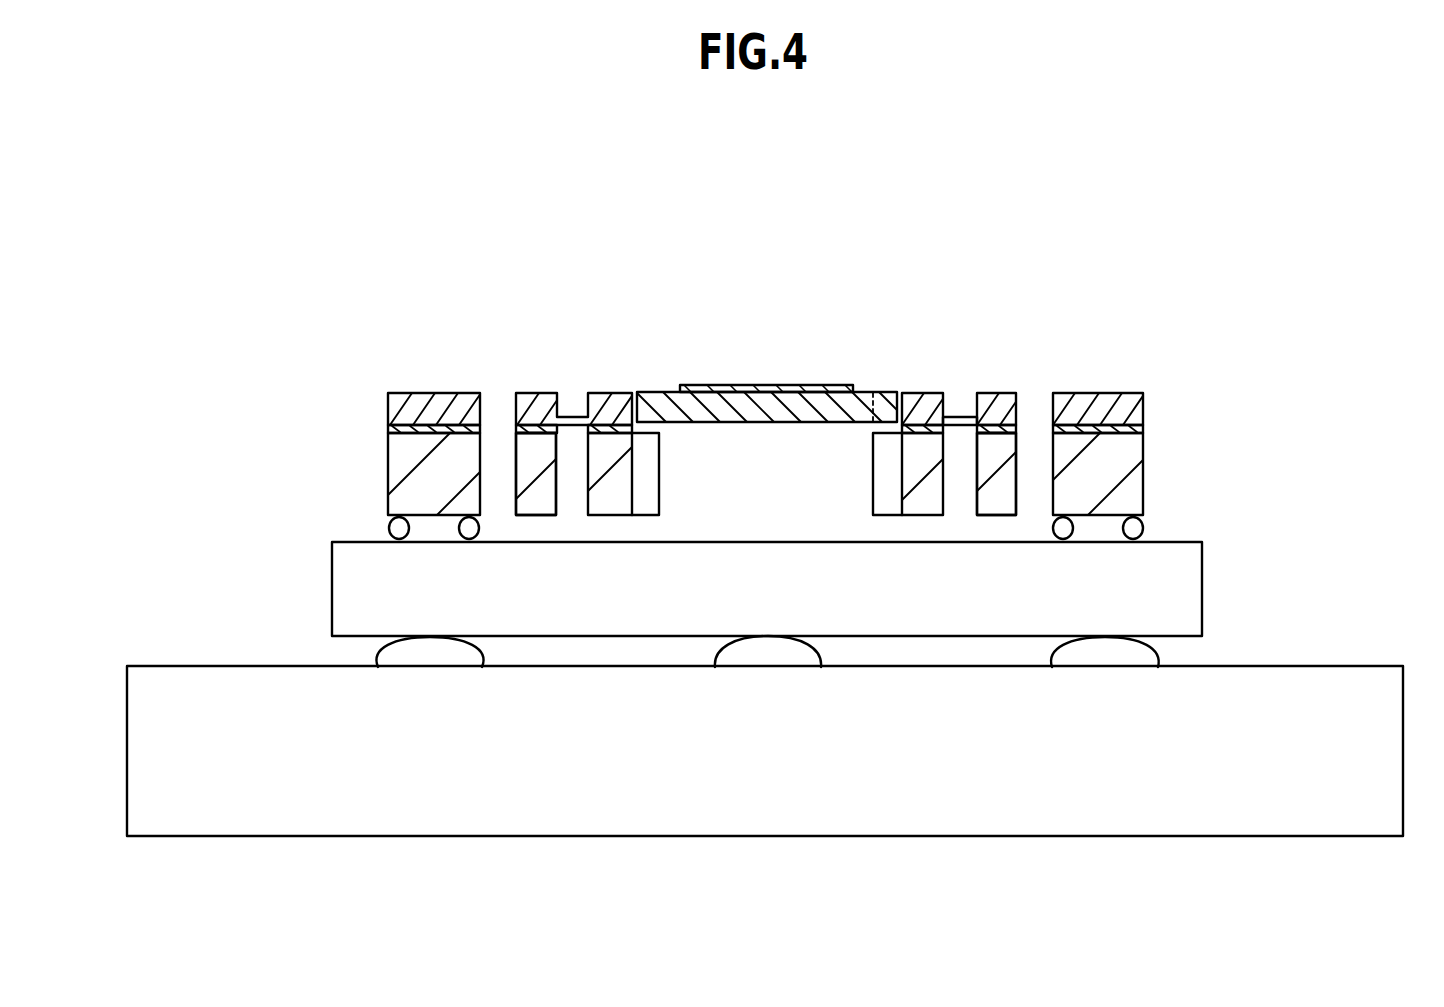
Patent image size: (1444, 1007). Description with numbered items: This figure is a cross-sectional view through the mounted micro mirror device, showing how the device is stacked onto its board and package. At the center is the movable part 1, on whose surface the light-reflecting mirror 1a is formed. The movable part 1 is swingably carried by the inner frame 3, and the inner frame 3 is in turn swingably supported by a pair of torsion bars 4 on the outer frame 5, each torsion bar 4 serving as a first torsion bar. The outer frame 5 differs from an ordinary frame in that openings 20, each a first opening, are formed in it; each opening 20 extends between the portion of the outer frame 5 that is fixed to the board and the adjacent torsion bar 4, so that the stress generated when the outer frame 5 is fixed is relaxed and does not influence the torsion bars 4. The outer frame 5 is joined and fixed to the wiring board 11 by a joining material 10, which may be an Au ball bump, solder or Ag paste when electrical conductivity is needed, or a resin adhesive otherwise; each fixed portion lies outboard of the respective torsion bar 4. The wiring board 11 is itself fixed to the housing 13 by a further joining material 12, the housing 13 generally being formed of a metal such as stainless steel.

The movable part 1 is at (770, 422).
The mirror 1a is at (780, 386).
The inner frame 3 is at (873, 406).
The torsion bar 4 is at (957, 405).
The outer frame 5 is at (1108, 405).
The opening 20 is at (497, 420).
The joining material 10 is at (1130, 534).
The wiring board 11 is at (1180, 600).
The joining material 12 is at (1130, 648).
The housing 13 is at (1220, 830).